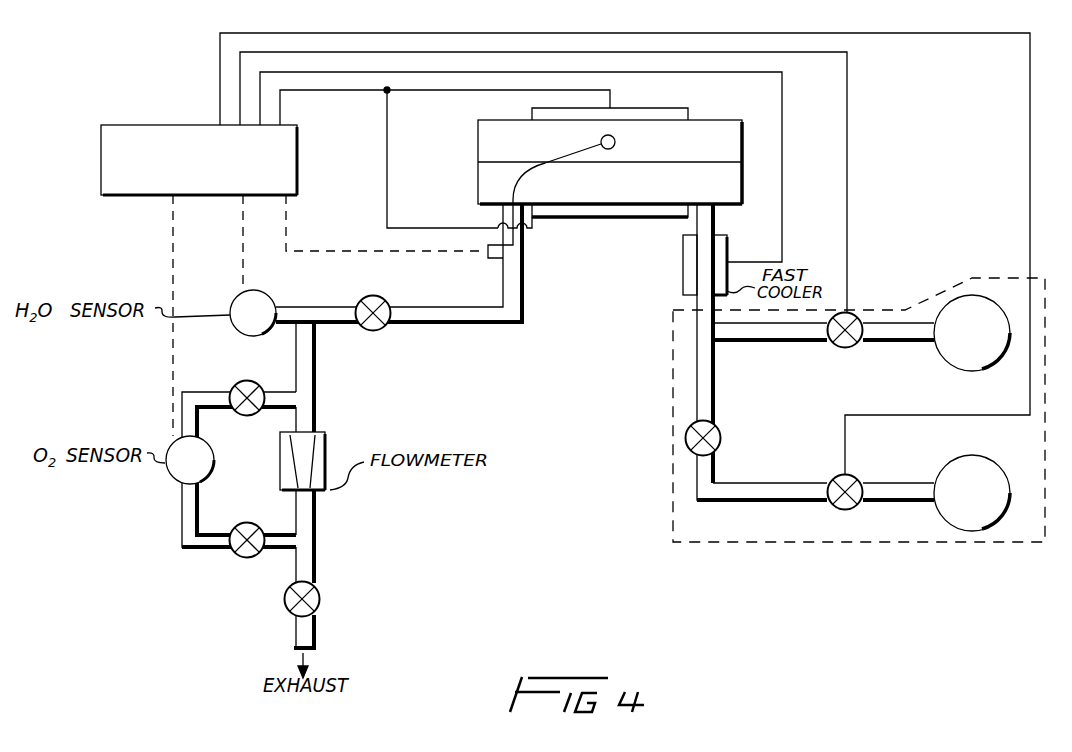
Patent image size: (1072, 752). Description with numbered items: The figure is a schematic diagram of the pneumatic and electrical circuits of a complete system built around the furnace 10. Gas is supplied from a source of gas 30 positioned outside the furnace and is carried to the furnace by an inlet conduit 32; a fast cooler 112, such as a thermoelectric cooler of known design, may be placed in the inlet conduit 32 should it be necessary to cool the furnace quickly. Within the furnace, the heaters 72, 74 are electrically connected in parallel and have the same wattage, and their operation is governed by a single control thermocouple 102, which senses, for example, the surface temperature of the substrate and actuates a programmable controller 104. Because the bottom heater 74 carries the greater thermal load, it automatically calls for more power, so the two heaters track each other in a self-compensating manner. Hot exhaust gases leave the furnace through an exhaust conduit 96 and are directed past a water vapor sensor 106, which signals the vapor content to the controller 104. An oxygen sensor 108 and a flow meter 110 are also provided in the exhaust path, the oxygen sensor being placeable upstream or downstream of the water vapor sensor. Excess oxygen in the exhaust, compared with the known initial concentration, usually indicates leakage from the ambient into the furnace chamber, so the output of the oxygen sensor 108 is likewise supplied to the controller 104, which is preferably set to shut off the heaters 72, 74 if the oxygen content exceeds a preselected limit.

The furnace 10 is at (666, 228).
The source of gas 30 is at (778, 544).
The conduit 32 is at (716, 221).
The heater 72 is at (661, 113).
The bottom heater 74 is at (583, 214).
The exhaust conduit 96 is at (523, 277).
The control thermocouple 102 is at (615, 142).
The programmable controller 104 is at (101, 150).
The water vapor sensor 106 is at (271, 293).
The oxygen sensor 108 is at (170, 478).
The flow meter 110 is at (330, 448).
The fast cooler 112 is at (727, 243).